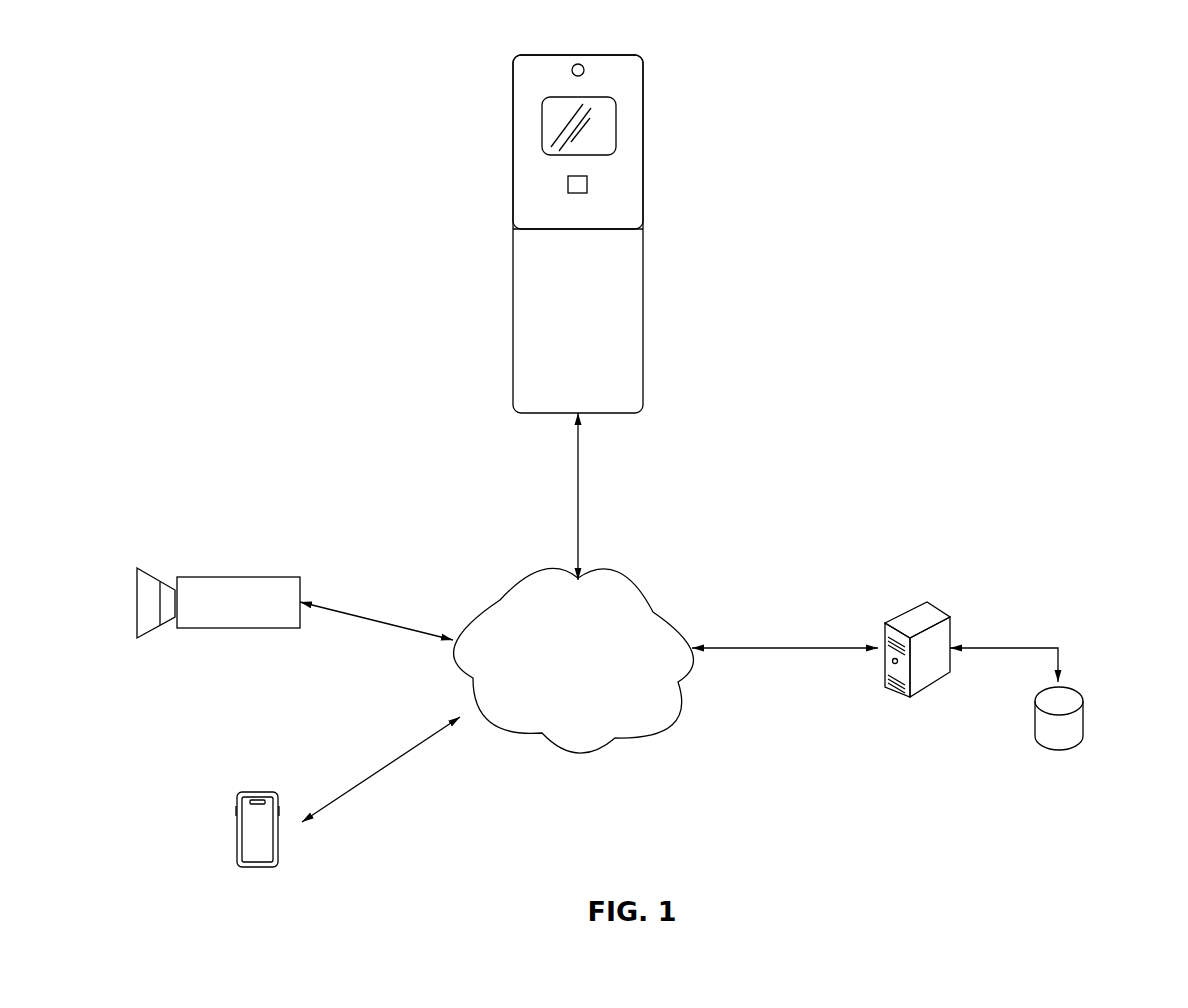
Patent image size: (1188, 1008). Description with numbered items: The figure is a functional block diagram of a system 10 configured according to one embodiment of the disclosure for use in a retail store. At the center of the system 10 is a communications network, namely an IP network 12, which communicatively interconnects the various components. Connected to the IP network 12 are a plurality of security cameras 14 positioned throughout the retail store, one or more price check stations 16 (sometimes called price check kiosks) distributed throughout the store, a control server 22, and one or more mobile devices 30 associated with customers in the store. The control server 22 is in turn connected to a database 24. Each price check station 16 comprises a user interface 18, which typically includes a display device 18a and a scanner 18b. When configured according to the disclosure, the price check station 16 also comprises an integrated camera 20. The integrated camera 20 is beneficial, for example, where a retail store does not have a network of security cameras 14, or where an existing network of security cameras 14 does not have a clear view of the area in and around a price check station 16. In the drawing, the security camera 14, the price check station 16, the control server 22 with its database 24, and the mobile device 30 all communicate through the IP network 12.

The system 10 is at (1060, 124).
The IP network 12 is at (563, 705).
The security camera 14 is at (217, 577).
The price check station 16 is at (513, 113).
The user interface 18 is at (480, 238).
The display device 18a is at (616, 118).
The scanner 18b is at (587, 186).
The integrated camera 20 is at (573, 62).
The control server 22 is at (933, 590).
The database 24 is at (1082, 698).
The mobile device 30 is at (253, 790).